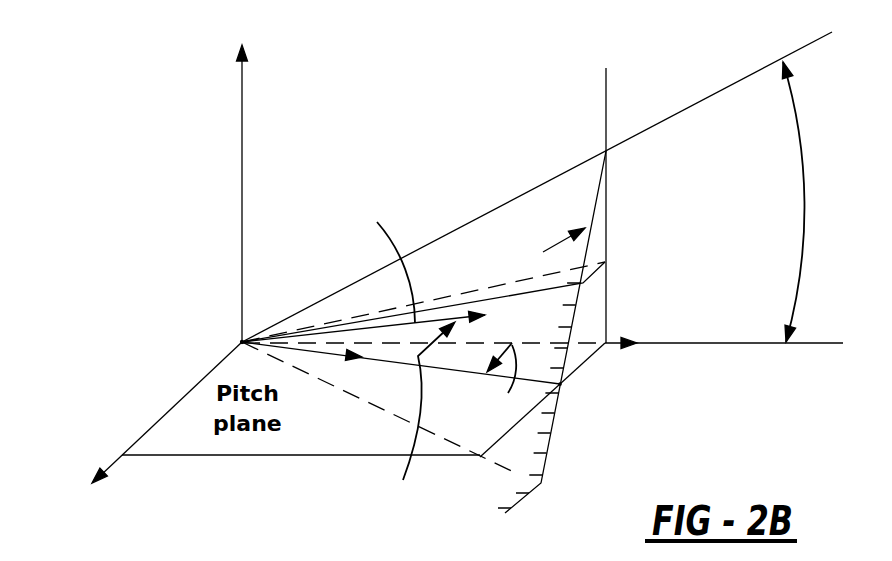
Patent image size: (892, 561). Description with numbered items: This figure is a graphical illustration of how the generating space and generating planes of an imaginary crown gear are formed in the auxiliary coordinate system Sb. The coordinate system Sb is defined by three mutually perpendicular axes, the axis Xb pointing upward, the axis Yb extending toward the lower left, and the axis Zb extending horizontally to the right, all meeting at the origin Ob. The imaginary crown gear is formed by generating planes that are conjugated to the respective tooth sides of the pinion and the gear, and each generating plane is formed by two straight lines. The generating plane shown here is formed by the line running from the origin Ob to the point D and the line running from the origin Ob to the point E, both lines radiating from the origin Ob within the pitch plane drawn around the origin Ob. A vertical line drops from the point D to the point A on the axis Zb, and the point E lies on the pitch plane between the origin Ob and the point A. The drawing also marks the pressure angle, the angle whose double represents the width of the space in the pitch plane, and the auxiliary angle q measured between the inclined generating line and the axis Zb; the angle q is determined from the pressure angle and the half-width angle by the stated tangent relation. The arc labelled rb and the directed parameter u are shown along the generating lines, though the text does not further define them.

The x axis of coordinate system Sb Xb is at (260, 192).
The y axis of coordinate system Sb Yb is at (167, 422).
The z axis of coordinate system Sb Zb is at (542, 330).
The auxiliary coordinate system Sb is at (232, 157).
The origin of coordinate system Sb Ob is at (222, 329).
The point D is at (595, 205).
The point A is at (547, 400).
The point E is at (566, 397).
The auxiliary parameter q is at (537, 187).
The radius rb is at (382, 259).
The parameter u is at (302, 352).